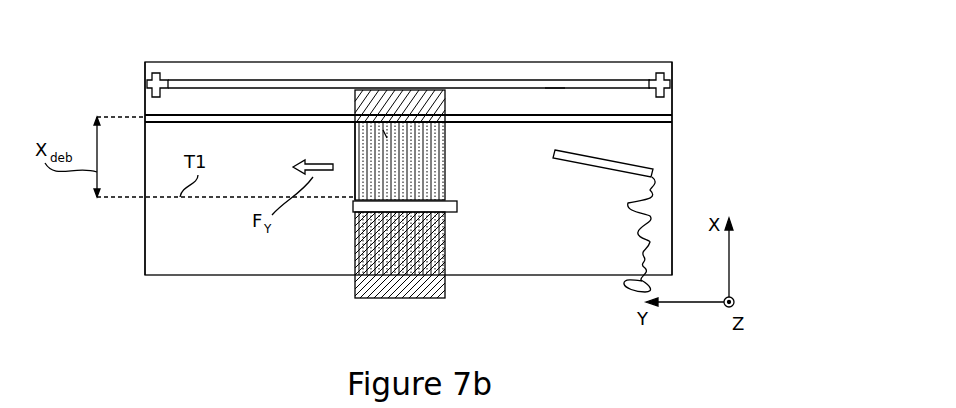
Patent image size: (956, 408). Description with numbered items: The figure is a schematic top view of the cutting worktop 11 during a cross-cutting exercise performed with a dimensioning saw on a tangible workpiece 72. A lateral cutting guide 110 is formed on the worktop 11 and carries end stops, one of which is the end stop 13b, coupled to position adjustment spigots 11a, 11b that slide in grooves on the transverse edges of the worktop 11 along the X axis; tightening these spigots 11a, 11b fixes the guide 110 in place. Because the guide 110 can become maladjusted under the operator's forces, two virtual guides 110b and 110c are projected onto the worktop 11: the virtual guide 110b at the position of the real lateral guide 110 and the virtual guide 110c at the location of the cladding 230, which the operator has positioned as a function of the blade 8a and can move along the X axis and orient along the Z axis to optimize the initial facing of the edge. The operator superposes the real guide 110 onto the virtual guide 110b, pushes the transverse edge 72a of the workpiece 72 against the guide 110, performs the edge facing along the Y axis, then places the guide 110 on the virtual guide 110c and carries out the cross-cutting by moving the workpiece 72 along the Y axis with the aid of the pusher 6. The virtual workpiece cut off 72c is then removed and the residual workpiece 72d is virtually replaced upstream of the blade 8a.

The worktop 11 is at (650, 62).
The position adjustment spigot 11a is at (150, 85).
The position adjustment spigot 11b is at (673, 85).
The end stop 13b is at (158, 73).
The lateral cutting guide 110 is at (630, 87).
The virtual guide 110b is at (565, 86).
The virtual guide 110c is at (515, 115).
The tangible workpiece 72 is at (446, 162).
The transverse edge 72a is at (413, 90).
The virtual workpiece cut off 72c is at (415, 262).
The residual workpiece 72d is at (385, 135).
The blade 8a is at (448, 212).
The cladding 230 is at (353, 186).
The pusher 6 is at (588, 168).